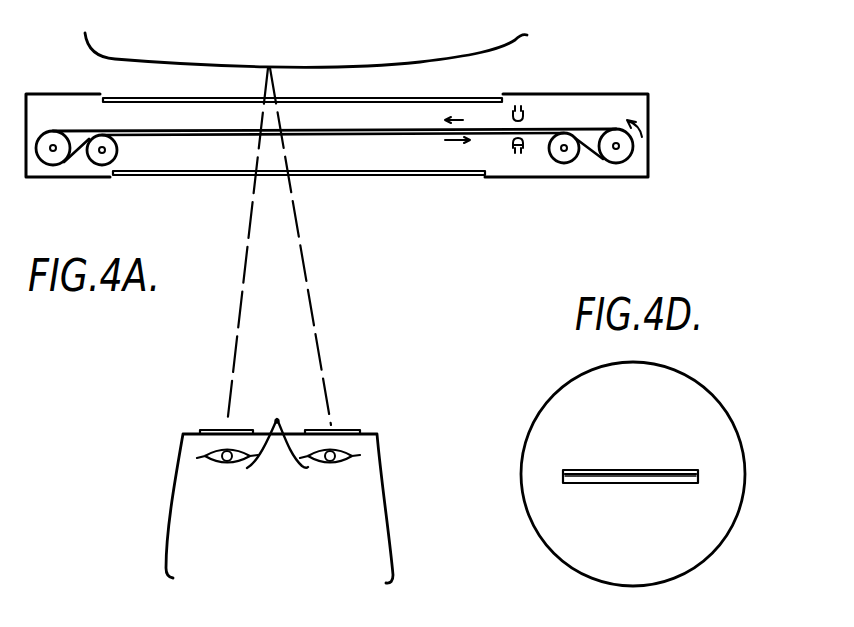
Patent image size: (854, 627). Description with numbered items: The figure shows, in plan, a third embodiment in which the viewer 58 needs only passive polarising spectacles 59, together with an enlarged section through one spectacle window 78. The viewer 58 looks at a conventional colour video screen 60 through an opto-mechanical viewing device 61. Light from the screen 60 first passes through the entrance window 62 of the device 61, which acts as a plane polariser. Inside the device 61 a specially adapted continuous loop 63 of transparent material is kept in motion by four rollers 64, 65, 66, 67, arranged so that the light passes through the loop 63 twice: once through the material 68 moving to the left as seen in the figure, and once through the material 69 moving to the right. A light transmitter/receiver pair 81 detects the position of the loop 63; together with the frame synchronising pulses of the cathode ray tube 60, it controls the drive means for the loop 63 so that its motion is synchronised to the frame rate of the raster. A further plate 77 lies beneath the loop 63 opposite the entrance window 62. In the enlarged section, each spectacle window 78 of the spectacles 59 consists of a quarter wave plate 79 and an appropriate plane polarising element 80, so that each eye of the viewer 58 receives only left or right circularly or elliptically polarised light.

In FIG. 4A, the viewer 58 is at (281, 440).
In FIG. 4A, the polarising spectacles 59 is at (181, 461).
In FIG. 4A, the colour video screen 60 is at (403, 63).
In FIG. 4A, the opto-mechanical viewing device 61 is at (650, 118).
In FIG. 4A, the entrance window 62 is at (478, 98).
In FIG. 4A, the continuous loop 63 is at (594, 128).
In FIG. 4A, the roller 64 is at (53, 157).
In FIG. 4A, the roller 65 is at (100, 157).
In FIG. 4A, the roller 66 is at (573, 152).
In FIG. 4A, the roller 67 is at (618, 152).
In FIG. 4A, the material moving to the left 68 is at (153, 128).
In FIG. 4A, the material moving to the right 69 is at (163, 132).
In FIG. 4A, the lower plate 77 is at (352, 176).
In FIG. 4A, the spectacle window 78 is at (345, 431).
In FIG. 4D, the spectacle window 78 is at (683, 376).
In FIG. 4D, the quarter wave plate 79 is at (639, 470).
In FIG. 4D, the plane polarising element 80 is at (636, 483).
In FIG. 4A, the light transmitter/receiver pair 81 is at (524, 117).